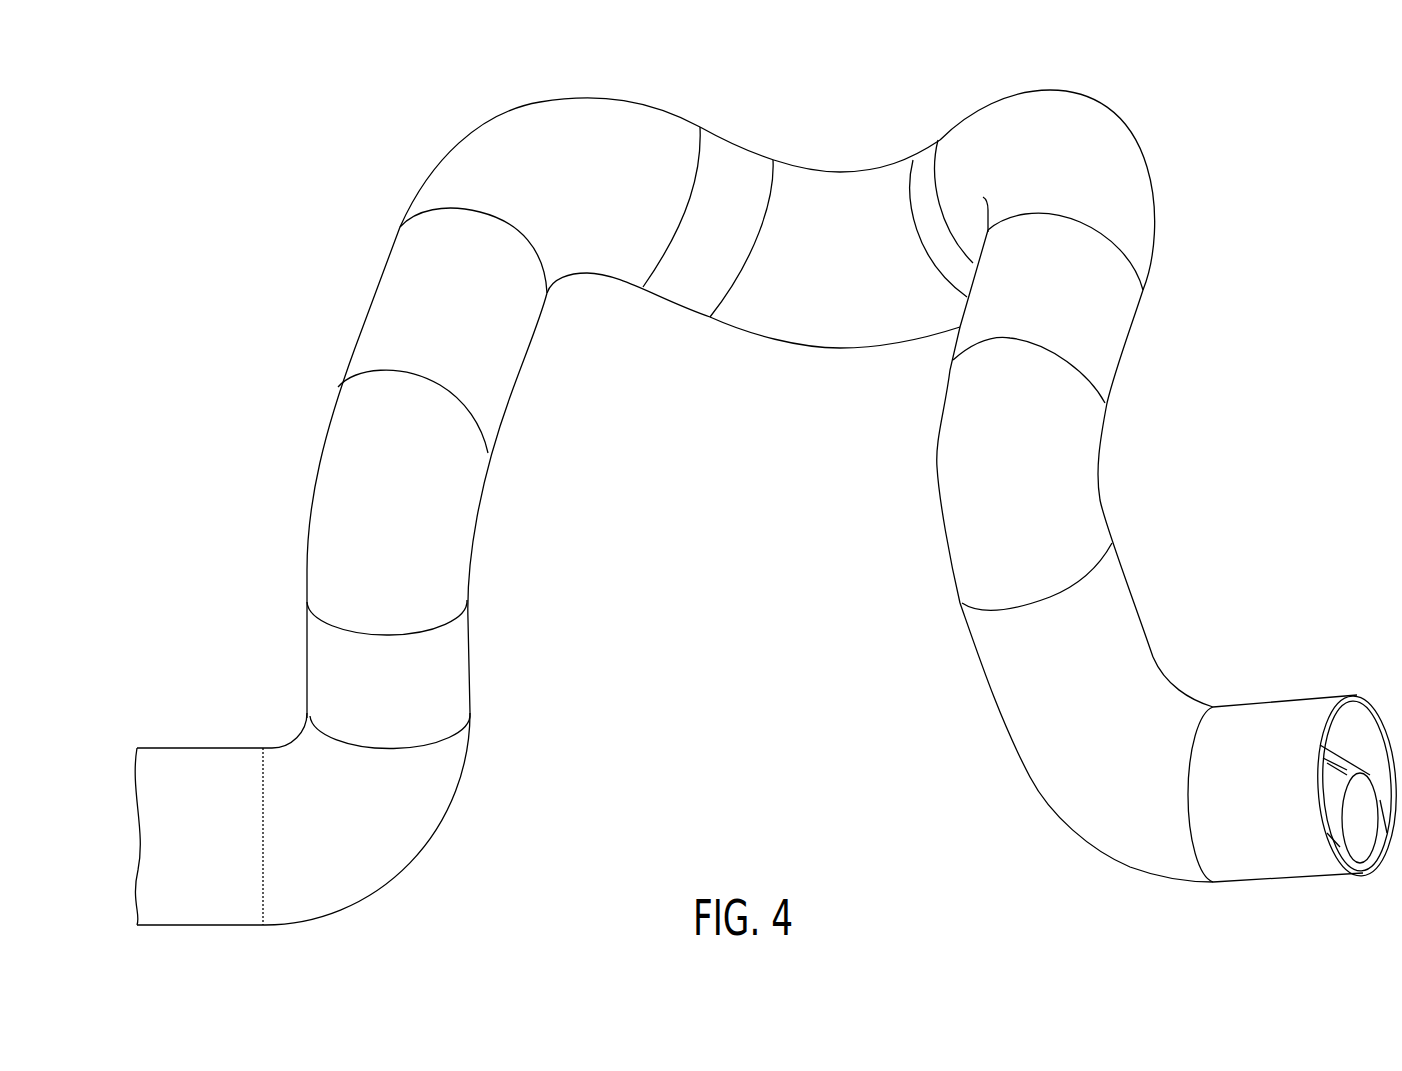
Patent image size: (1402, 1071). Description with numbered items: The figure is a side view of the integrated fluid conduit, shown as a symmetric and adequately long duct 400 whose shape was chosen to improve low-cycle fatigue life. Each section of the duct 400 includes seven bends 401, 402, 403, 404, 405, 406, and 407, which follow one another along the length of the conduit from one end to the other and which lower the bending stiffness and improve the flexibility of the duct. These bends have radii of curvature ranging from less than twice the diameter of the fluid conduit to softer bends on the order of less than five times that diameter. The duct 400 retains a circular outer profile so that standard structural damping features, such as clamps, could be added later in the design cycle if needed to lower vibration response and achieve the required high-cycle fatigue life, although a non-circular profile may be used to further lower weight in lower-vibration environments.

The duct 400 is at (1241, 404).
The bend 401 is at (430, 848).
The bend 402 is at (353, 347).
The bend 403 is at (522, 108).
The bend 404 is at (858, 170).
The bend 405 is at (1128, 128).
The bend 406 is at (937, 470).
The bend 407 is at (1073, 830).